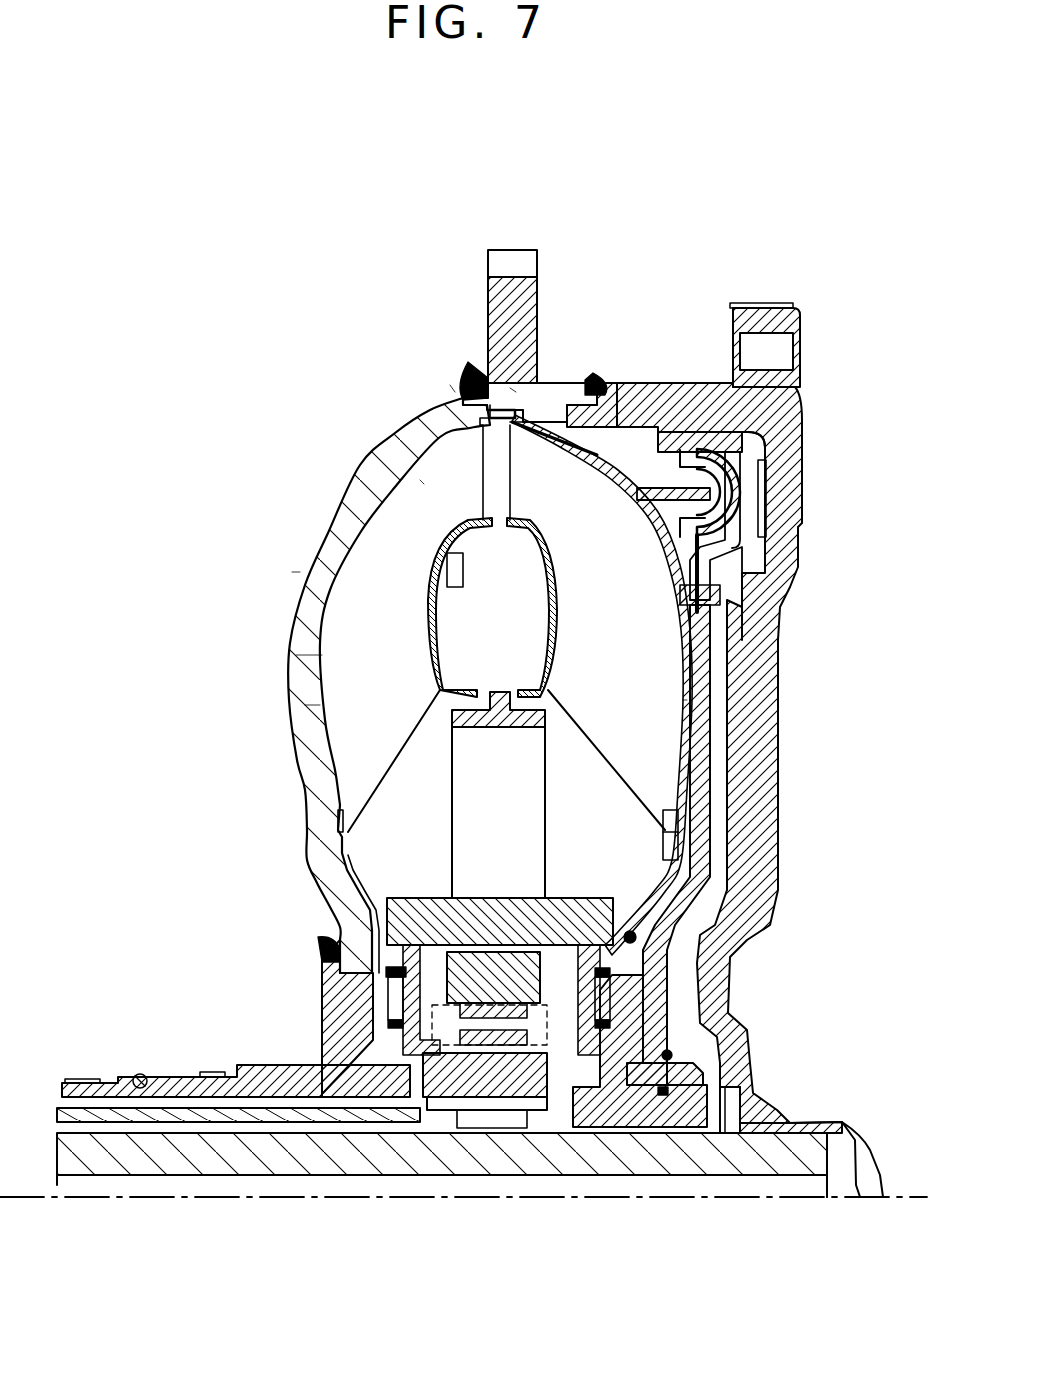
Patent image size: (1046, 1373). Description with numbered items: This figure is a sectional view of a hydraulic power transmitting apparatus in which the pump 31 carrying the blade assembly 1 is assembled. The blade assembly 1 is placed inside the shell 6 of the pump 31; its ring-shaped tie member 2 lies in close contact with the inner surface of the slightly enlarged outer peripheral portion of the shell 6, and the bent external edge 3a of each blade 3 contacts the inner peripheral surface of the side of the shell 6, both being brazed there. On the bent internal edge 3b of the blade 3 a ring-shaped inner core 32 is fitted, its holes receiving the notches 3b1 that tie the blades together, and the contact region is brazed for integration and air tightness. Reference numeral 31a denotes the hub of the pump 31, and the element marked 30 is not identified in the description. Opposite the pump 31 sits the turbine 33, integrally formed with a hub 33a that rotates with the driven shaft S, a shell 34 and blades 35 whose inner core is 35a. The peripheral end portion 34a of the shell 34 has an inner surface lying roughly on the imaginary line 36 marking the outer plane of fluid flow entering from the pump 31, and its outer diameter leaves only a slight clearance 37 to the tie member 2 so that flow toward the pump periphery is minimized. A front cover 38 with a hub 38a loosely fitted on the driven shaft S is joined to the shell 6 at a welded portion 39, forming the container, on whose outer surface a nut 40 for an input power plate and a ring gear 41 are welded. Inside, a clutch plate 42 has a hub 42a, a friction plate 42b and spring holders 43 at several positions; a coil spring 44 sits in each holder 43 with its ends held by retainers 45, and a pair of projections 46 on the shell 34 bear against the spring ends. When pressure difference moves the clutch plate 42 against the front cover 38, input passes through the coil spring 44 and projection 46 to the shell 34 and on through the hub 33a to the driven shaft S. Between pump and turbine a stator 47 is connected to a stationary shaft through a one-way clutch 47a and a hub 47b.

The blade assembly 1 is at (420, 480).
The tie member 2 is at (512, 390).
The blade 3 is at (335, 735).
The external edge 3a is at (305, 705).
The internal edge 3b is at (432, 685).
The notch 3b1 is at (456, 588).
The shell 6 is at (296, 655).
The lock-up clutch mechanism 30 is at (450, 385).
The pump 31 is at (290, 572).
The hub 31a is at (290, 1065).
The inner core 32 is at (436, 655).
The turbine 33 is at (663, 682).
The hub 33a is at (625, 1130).
The shell 34 is at (577, 437).
The peripheral end portion 34a is at (514, 430).
The blades 35 is at (683, 733).
The inner core 35a is at (555, 603).
The imaginary line 36 is at (483, 428).
The clearance 37 is at (545, 412).
The front cover 38 is at (783, 590).
The hub 38a is at (800, 1125).
The welded portion 39 is at (580, 397).
The nut 40 is at (790, 328).
The ring gear 41 is at (522, 250).
The clutch plate 42 is at (703, 783).
The hub 42a is at (690, 1060).
The friction plate 42b is at (765, 515).
The spring holder 43 is at (745, 455).
The coil spring 44 is at (732, 500).
The retainer 45 is at (773, 408).
The projection 46 is at (647, 480).
The stator 47 is at (378, 855).
The one-way clutch 47a is at (500, 1100).
The hub 47b is at (447, 1097).
The driven shaft S is at (733, 1165).